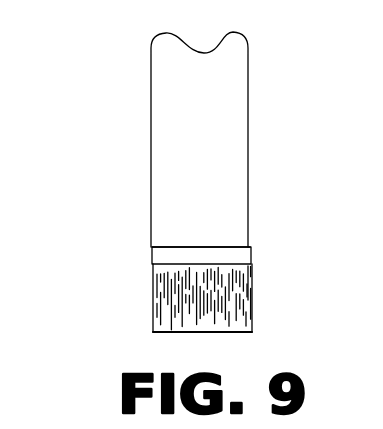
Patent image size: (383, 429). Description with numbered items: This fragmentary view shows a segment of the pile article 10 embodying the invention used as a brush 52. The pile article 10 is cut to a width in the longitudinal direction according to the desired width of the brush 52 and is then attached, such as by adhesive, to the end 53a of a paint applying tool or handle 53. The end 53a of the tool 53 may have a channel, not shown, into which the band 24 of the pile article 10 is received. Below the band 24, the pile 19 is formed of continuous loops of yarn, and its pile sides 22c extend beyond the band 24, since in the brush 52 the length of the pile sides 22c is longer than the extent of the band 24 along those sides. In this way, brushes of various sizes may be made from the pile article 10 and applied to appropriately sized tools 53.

The brush 52 is at (197, 182).
The paint applying tool 53 is at (160, 186).
The end of the tool 53a is at (210, 247).
The band 24 is at (153, 258).
The pile article 10 is at (154, 300).
The pile sides 22c is at (245, 281).
The pile 19 is at (244, 318).